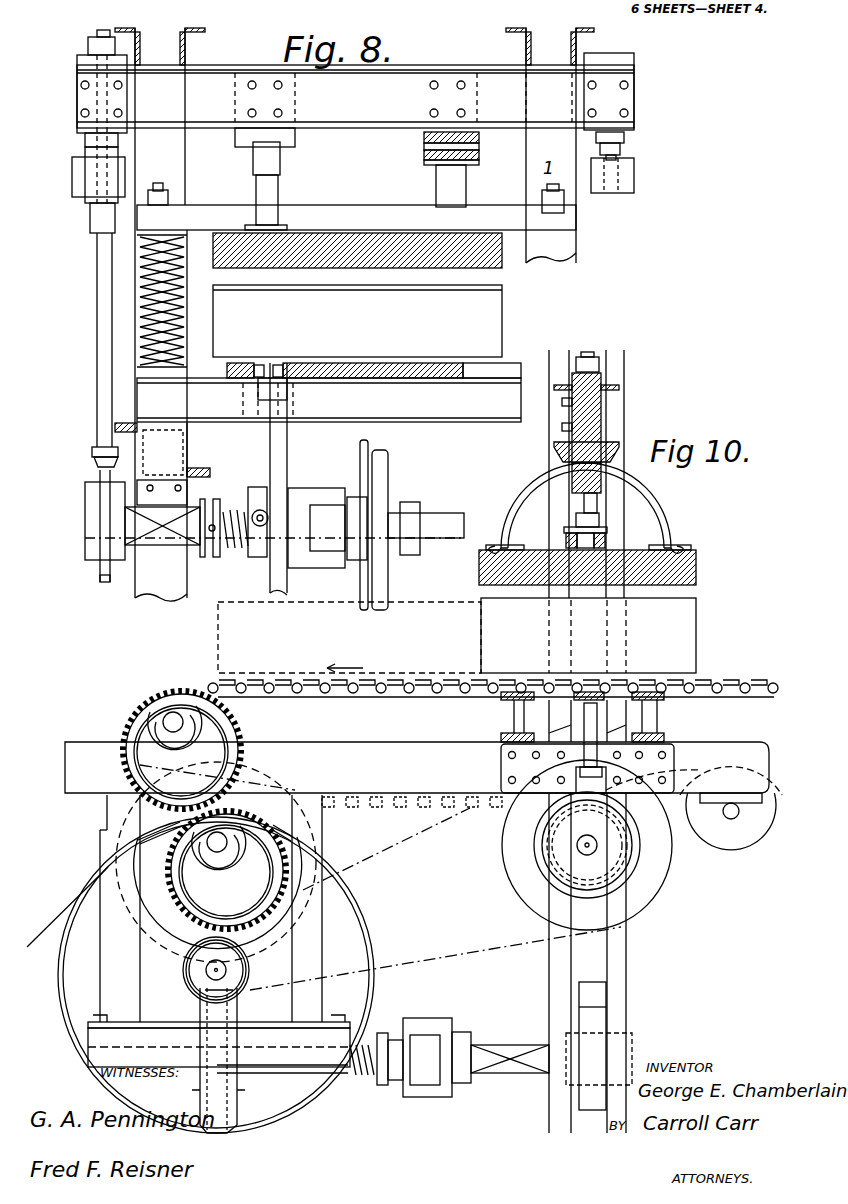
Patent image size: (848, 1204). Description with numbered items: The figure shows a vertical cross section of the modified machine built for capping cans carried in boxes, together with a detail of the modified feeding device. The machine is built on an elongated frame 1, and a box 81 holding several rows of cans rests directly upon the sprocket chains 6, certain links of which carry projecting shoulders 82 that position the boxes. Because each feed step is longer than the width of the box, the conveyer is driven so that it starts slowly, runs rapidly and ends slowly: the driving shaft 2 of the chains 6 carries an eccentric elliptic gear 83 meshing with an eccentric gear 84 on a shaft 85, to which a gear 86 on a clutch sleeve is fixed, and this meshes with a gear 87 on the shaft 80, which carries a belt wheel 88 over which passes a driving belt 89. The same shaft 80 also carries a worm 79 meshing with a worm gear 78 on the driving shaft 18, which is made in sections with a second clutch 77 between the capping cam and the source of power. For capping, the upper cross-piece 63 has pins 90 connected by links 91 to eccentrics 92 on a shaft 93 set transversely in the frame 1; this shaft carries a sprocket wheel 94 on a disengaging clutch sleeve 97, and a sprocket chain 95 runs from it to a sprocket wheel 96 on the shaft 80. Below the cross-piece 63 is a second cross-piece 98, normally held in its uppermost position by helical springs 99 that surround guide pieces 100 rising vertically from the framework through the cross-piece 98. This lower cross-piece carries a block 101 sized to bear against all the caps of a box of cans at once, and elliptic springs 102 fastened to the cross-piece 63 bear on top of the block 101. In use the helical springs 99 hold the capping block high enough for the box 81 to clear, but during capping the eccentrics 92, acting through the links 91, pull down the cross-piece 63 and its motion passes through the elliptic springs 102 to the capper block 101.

In FIG. 8, the frame 1 is at (417, 585).
In FIG. 8, the shaft 2 is at (163, 722).
In FIG. 8, the sprocket chains 6 is at (477, 362).
In FIG. 8, the driving shaft 18 is at (496, 1047).
In FIG. 8, the cross-piece 63 is at (348, 128).
In FIG. 10, the cross-piece 63 is at (604, 388).
In FIG. 8, the second clutch 77 is at (424, 1057).
In FIG. 8, the worm gear 78 is at (233, 1108).
In FIG. 8, the worm 79 is at (198, 996).
In FIG. 8, the shaft 80 is at (224, 971).
In FIG. 8, the box 81 is at (454, 479).
In FIG. 8, the projecting shoulders 82 is at (173, 680).
In FIG. 8, the eccentric elliptic gear 83 is at (226, 728).
In FIG. 8, the eccentric gear 84 is at (178, 888).
In FIG. 8, the shaft 85 is at (219, 844).
In FIG. 8, the gear 86 is at (176, 934).
In FIG. 8, the gear 87 is at (243, 948).
In FIG. 8, the belt wheel 88 is at (80, 938).
In FIG. 8, the driving belt 89 is at (67, 907).
In FIG. 8, the pins 90 is at (83, 157).
In FIG. 8, the links 91 is at (98, 380).
In FIG. 8, the eccentrics 92 is at (92, 495).
In FIG. 8, the shaft 93 is at (449, 527).
In FIG. 8, the sprocket wheel 94 is at (388, 582).
In FIG. 8, the sprocket chain 95 is at (380, 877).
In FIG. 8, the sprocket wheel 96 is at (186, 970).
In FIG. 8, the clutch sleeve 97 is at (274, 527).
In FIG. 8, the second cross-piece 98 is at (337, 213).
In FIG. 10, the second cross-piece 98 is at (567, 538).
In FIG. 8, the helical springs 99 is at (138, 352).
In FIG. 8, the guide pieces 100 is at (166, 276).
In FIG. 8, the block 101 is at (370, 257).
In FIG. 10, the block 101 is at (696, 570).
In FIG. 10, the elliptic springs 102 is at (646, 500).